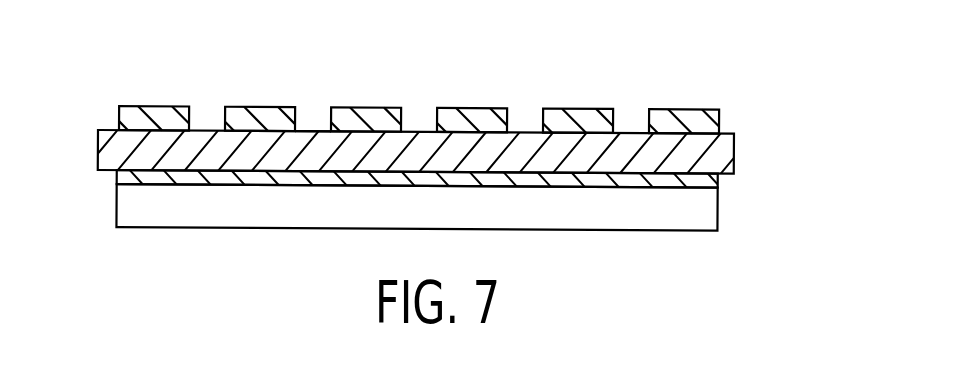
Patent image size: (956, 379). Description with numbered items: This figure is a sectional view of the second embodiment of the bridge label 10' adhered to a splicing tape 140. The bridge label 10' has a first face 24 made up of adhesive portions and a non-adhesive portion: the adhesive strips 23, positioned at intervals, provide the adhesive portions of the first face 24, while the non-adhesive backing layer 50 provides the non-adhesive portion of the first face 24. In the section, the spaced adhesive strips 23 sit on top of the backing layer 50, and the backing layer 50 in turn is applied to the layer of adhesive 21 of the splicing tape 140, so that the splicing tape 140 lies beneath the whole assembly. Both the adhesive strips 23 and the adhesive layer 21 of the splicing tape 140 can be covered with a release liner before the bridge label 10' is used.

The bridge label 10' is at (443, 123).
The adhesive strips 23 is at (263, 90).
The first face 24 is at (422, 90).
The non-adhesive backing layer 50 is at (725, 155).
The adhesive layer 21 is at (129, 174).
The splicing tape 140 is at (747, 206).